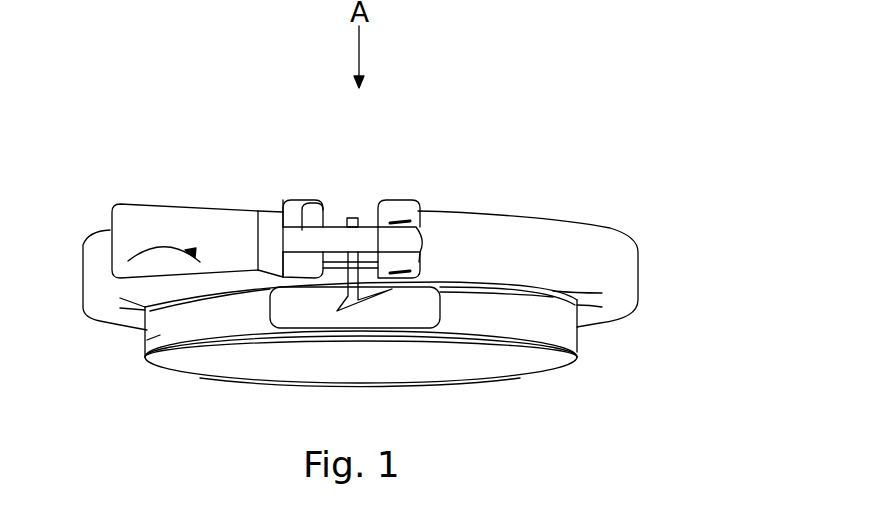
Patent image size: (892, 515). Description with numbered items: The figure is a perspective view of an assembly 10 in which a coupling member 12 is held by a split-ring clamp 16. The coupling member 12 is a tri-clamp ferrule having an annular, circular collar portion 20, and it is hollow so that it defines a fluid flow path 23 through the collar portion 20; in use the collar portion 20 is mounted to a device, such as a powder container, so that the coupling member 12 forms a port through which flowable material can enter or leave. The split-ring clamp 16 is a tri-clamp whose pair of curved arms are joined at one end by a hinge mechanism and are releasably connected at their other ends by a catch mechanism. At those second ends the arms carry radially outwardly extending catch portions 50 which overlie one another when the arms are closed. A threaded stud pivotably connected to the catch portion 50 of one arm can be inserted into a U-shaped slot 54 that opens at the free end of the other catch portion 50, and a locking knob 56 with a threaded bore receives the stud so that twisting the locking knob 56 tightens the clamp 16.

The assembly 10 is at (650, 133).
The coupling member 12 is at (583, 353).
The split-ring clamp 16 is at (623, 262).
The collar portion 20 is at (144, 352).
The fluid flow path 23 is at (523, 365).
The catch portion 50 is at (403, 208).
The U-shaped slot 54 is at (299, 214).
The locking knob 56 is at (160, 220).